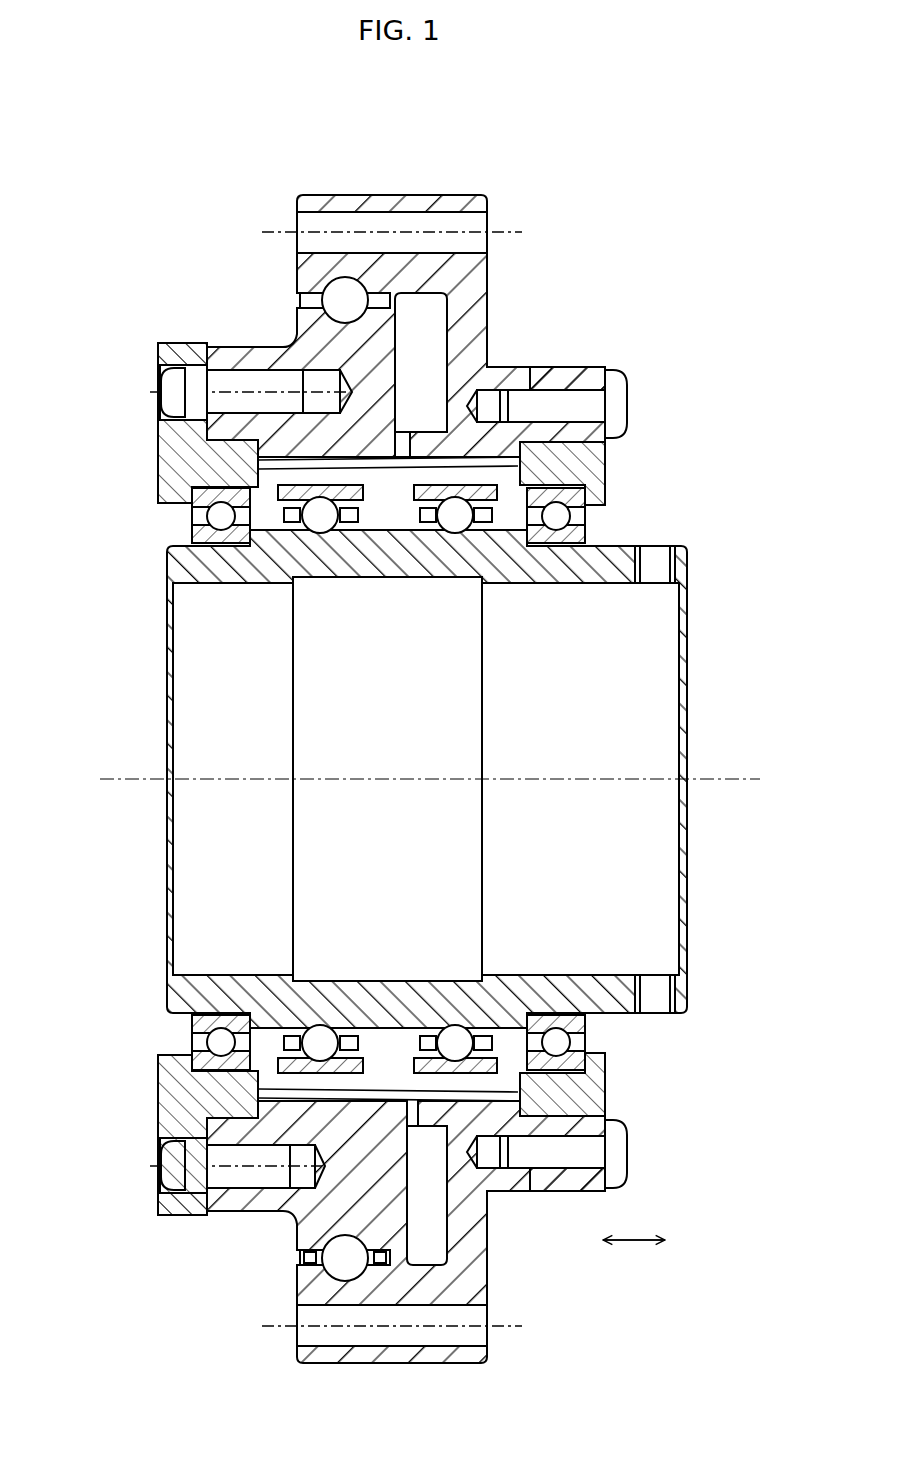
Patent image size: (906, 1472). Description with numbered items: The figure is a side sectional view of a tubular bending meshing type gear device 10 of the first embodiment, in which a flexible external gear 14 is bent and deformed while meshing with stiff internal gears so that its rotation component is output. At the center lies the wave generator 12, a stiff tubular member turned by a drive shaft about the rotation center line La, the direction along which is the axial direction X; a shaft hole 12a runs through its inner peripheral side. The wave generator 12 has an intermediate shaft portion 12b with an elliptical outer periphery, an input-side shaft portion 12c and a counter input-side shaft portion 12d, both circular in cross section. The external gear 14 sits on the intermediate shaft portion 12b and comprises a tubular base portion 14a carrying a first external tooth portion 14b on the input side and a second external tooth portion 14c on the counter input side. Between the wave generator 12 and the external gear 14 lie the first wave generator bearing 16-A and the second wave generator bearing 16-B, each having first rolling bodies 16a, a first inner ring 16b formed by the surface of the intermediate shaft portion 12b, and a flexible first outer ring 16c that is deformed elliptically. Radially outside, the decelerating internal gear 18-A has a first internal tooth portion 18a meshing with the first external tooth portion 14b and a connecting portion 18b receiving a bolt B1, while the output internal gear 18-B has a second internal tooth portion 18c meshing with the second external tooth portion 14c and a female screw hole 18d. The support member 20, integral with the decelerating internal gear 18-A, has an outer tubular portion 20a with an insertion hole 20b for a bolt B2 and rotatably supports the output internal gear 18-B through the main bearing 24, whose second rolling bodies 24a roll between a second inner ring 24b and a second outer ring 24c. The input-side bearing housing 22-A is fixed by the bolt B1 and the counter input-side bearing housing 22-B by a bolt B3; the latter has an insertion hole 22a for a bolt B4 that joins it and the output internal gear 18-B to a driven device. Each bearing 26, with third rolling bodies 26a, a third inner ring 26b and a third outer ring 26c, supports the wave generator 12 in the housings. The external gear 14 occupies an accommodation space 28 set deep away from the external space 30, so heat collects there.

The gear device 10 is at (718, 280).
The wave generator 12 is at (430, 745).
The shaft hole 12a is at (602, 583).
The intermediate shaft portion 12b is at (404, 548).
The input-side shaft portion 12c is at (562, 583).
The counter input-side shaft portion 12d is at (246, 583).
The external gear 14 is at (388, 568).
The base portion 14a is at (320, 534).
The first external tooth portion 14b is at (456, 534).
The second external tooth portion 14c is at (288, 532).
The first wave generator bearing 16-A is at (456, 1045).
The second wave generator bearing 16-B is at (406, 1100).
The first rolling bodies 16a is at (326, 1042).
The first inner ring 16b is at (272, 1040).
The first outer ring 16c is at (378, 1045).
The decelerating internal gear 18-A is at (502, 356).
The output internal gear 18-B is at (381, 351).
The first internal tooth portion 18a is at (424, 457).
The connecting portion 18b is at (542, 376).
The second internal tooth portion 18c is at (401, 457).
The female screw hole 18d is at (229, 385).
The support member 20 is at (403, 189).
The outer tubular portion 20a is at (314, 196).
The insertion hole 20b is at (352, 212).
The input-side bearing housing 22-A is at (612, 458).
The counter input-side bearing housing 22-B is at (144, 395).
The insertion hole 22a is at (180, 360).
The main bearing 24 is at (374, 1243).
The second rolling bodies 24a is at (352, 1262).
The second inner ring 24b is at (360, 1256).
The second outer ring 24c is at (360, 1268).
The bearing 26 is at (387, 1096).
The third rolling bodies 26a is at (224, 1030).
The third inner ring 26b is at (206, 1025).
The third outer ring 26c is at (162, 1088).
The accommodation space 28 is at (508, 548).
The external space 30 is at (790, 405).
The bolt B1 is at (620, 400).
The bolt B2 is at (498, 232).
The bolt B3 is at (172, 1160).
The bolt B4 is at (136, 386).
The rotation center line La is at (730, 782).
The axial direction X is at (635, 1245).